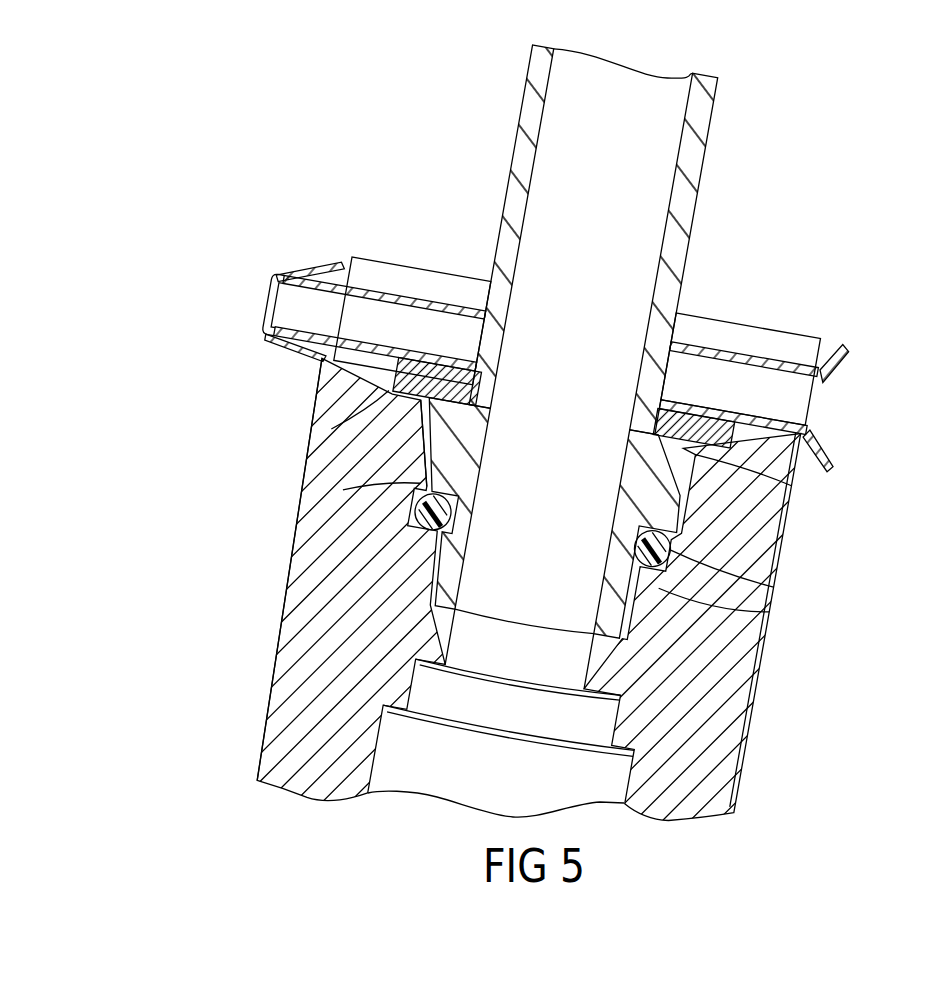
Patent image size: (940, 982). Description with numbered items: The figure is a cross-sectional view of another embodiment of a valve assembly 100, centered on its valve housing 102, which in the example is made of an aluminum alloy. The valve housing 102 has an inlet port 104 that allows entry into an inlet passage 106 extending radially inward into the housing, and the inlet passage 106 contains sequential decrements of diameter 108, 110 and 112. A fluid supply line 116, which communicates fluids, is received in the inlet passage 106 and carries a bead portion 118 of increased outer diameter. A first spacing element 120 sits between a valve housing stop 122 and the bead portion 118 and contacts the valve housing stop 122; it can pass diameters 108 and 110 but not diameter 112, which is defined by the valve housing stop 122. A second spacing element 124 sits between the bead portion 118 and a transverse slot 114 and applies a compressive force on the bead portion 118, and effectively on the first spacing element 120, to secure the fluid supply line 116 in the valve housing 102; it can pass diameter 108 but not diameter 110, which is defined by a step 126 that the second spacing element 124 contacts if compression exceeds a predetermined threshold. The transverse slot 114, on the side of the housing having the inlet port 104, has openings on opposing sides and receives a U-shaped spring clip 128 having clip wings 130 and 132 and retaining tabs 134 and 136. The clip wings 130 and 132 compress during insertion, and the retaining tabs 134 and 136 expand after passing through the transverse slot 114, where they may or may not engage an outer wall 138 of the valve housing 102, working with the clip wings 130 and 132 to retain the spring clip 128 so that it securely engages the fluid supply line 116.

The valve assembly 100 is at (470, 491).
The valve housing 102 is at (285, 600).
The inlet port 104 is at (569, 347).
The inlet passage 106 is at (393, 372).
The diameter 108 is at (387, 392).
The diameter 110 is at (425, 488).
The diameter 112 is at (435, 562).
The transverse slot 114 is at (812, 408).
The fluid supply line 116 is at (525, 140).
The bead portion 118 is at (678, 548).
The first spacing element 120 is at (700, 605).
The valve housing stop 122 is at (690, 613).
The second spacing element 124 is at (700, 462).
The step 126 is at (715, 505).
The spring clip 128 is at (733, 350).
The clip wing 130 is at (835, 470).
The clip wing 132 is at (850, 352).
The retaining tab 134 is at (325, 360).
The retaining tab 136 is at (333, 272).
The outer wall 138 is at (310, 474).